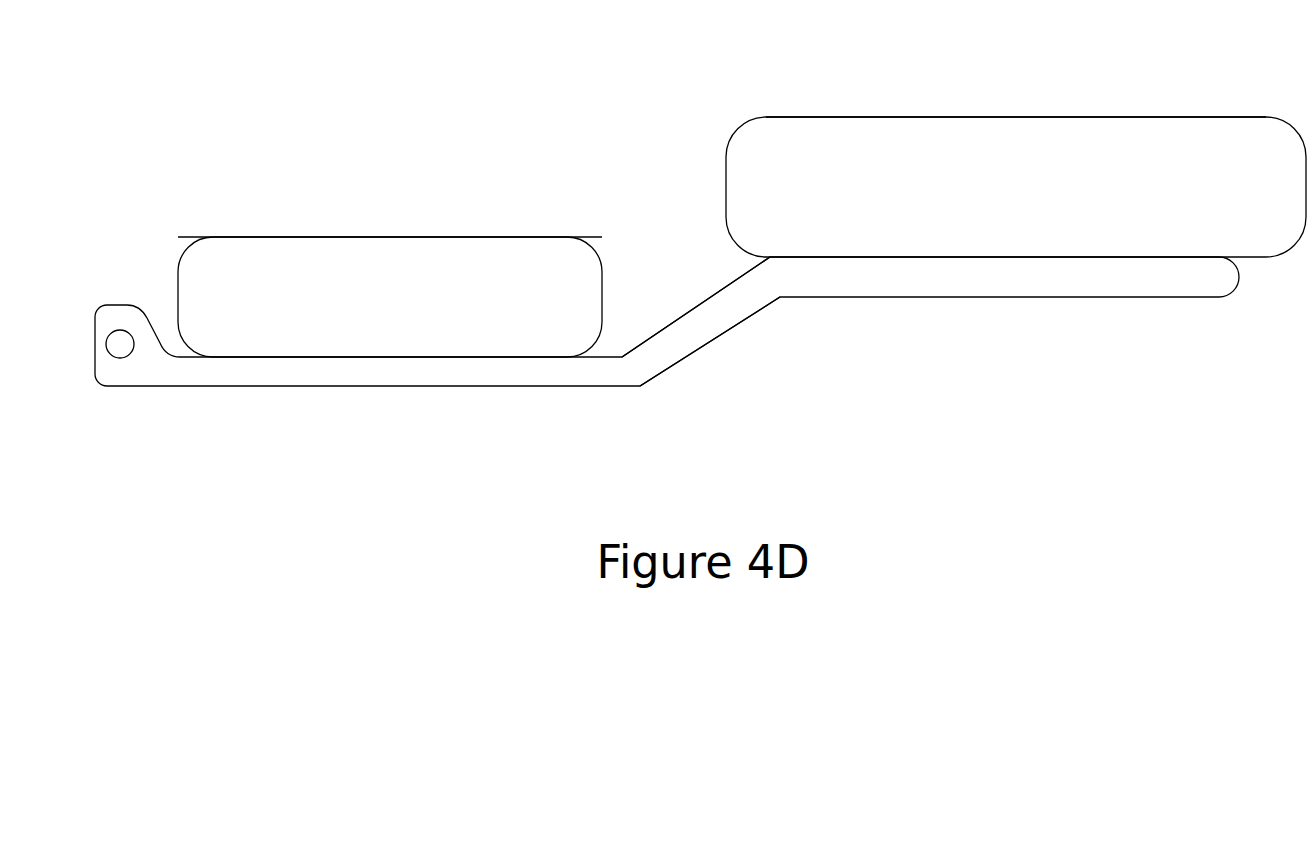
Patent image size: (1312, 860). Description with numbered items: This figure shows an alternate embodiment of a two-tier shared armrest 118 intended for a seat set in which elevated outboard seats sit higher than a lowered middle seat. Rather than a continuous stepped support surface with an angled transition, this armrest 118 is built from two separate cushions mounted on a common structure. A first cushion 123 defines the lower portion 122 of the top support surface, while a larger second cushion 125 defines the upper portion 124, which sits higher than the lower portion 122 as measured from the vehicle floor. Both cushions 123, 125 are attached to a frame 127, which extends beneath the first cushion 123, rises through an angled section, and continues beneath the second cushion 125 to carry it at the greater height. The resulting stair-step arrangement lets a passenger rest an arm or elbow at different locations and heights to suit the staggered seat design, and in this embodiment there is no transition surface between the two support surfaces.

The shared armrest 118 is at (825, 403).
The rearward portion 122 is at (412, 237).
The first cushion 123 is at (384, 312).
The forward portion 124 is at (922, 115).
The second cushion 125 is at (1044, 200).
The frame 127 is at (742, 302).